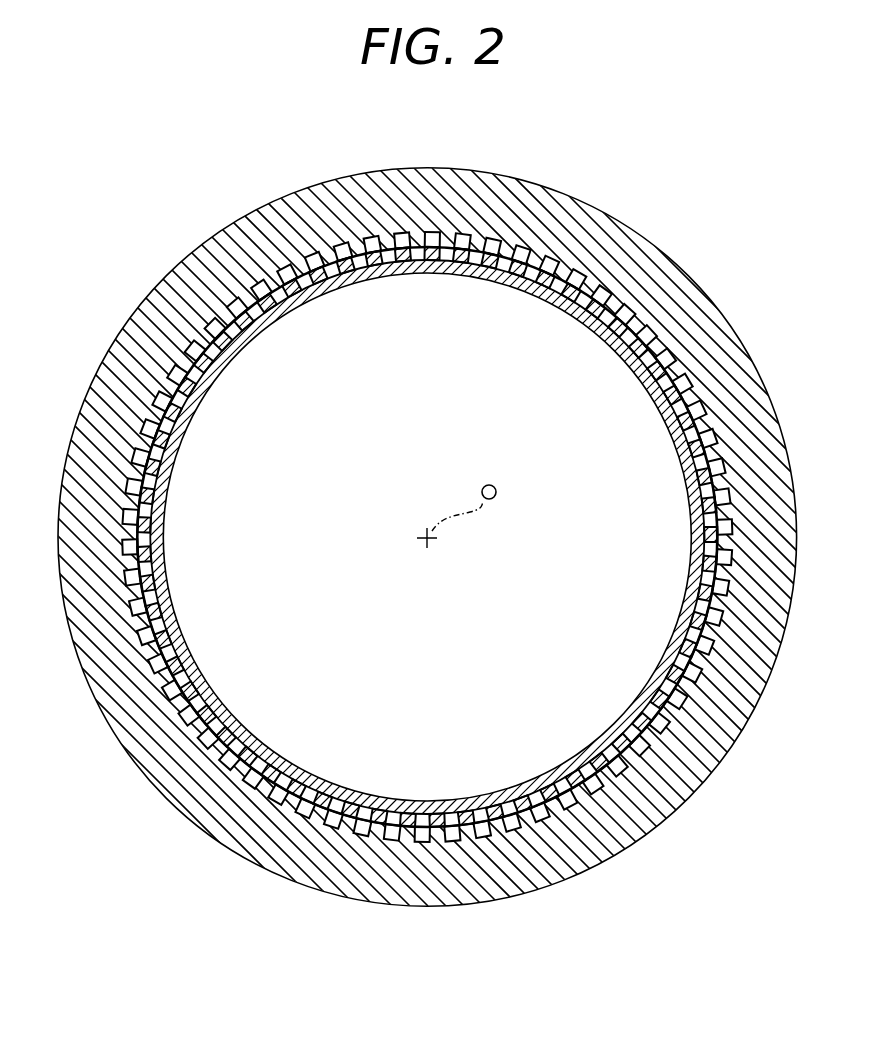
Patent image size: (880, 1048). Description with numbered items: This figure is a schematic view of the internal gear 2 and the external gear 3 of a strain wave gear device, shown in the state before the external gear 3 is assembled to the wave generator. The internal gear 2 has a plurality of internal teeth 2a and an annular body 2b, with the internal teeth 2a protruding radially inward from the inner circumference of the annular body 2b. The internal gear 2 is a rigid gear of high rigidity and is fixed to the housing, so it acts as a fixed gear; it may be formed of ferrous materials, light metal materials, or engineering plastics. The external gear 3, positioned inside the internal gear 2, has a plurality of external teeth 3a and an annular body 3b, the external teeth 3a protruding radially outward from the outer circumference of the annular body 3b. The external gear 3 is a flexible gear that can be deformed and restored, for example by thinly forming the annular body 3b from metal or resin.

The internal gear 2 is at (440, 537).
The internal teeth 2a is at (227, 313).
The annular body 2b is at (163, 332).
The external gear 3 is at (440, 537).
The external teeth 3a is at (233, 340).
The annular body 3b is at (210, 385).